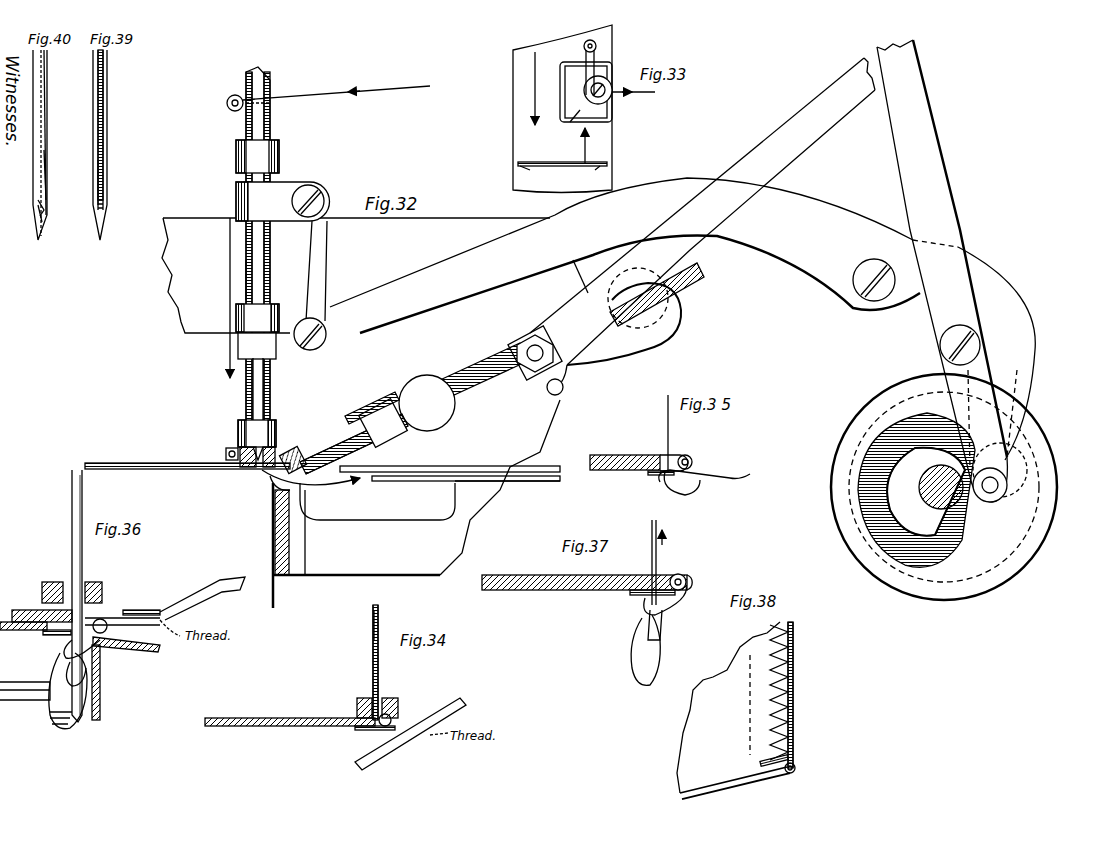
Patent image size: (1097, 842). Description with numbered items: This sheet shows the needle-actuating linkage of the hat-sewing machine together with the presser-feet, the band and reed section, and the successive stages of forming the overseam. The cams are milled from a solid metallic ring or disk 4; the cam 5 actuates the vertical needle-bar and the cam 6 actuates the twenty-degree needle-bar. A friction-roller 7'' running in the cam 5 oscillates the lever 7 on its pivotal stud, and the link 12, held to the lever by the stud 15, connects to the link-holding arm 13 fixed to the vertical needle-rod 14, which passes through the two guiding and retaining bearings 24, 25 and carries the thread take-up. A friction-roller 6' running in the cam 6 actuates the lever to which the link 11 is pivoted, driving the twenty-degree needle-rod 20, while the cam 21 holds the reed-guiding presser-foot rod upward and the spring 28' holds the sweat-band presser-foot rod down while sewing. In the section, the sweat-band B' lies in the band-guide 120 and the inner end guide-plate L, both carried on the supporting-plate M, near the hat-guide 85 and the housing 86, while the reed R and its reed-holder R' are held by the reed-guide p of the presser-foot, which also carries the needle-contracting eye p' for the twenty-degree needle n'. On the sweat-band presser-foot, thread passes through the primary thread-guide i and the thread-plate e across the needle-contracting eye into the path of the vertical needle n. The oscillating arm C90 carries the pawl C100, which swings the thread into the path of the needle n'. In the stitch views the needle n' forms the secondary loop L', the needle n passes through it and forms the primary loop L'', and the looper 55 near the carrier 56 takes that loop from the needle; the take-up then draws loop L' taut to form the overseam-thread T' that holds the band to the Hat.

In FIG. 32, the metallic ring or disk 4 is at (968, 600).
In FIG. 32, the vertical needle-bar cam 5 is at (1000, 495).
In FIG. 32, the twenty-degree needle-bar cam 6 is at (916, 515).
In FIG. 32, the friction-roller 6' is at (1022, 485).
In FIG. 32, the lever 7 is at (682, 319).
In FIG. 32, the friction-roller 7'' is at (956, 271).
In FIG. 32, the link 11 is at (785, 176).
In FIG. 32, the link 12 is at (326, 250).
In FIG. 32, the link-holding arm 13 is at (290, 192).
In FIG. 32, the vertical needle-rod 14 is at (270, 122).
In FIG. 32, the stud 15 is at (318, 348).
In FIG. 32, the twenty-degree needle-rod 20 is at (700, 286).
In FIG. 32, the cam 21 is at (665, 335).
In FIG. 32, the guiding and retaining bearing 24 is at (279, 148).
In FIG. 32, the guiding and retaining bearing 25 is at (236, 318).
In FIG. 32, the spring 28' is at (219, 274).
In FIG. 37, the looper 55 is at (658, 660).
In FIG. 36, the looper 55 is at (72, 725).
In FIG. 36, the shuttle carrier 56 is at (15, 672).
In FIG. 32, the hat-guide 85 is at (286, 575).
In FIG. 32, the housing 86 is at (416, 487).
In FIG. 32, the band-guide 120 is at (400, 466).
In FIG. 40, the needle n is at (50, 145).
In FIG. 39, the needle n is at (110, 145).
In FIG. 32, the needle n is at (266, 409).
In FIG. 36, the needle n is at (89, 596).
In FIG. 34, the needle n is at (386, 662).
In FIG. 32, the twenty-degree needle n' is at (323, 432).
In FIG. 36, the twenty-degree needle n' is at (202, 589).
In FIG. 34, the twenty-degree needle n' is at (410, 722).
In FIG. 33, the reed-guide p is at (543, 109).
In FIG. 32, the reed-guide p is at (269, 436).
In FIG. 32, the needle-contracting eye p' is at (368, 419).
In FIG. 32, the primary thread-guide i is at (226, 450).
In FIG. 32, the inner end guide-plate L is at (466, 490).
In FIG. 32, the supporting-plate M is at (468, 481).
In FIG. 32, the sweat-band B' is at (187, 478).
In FIG. 35, the sweat-band B' is at (639, 451).
In FIG. 37, the sweat-band B' is at (587, 575).
In FIG. 35, the reed R is at (700, 433).
In FIG. 37, the reed R is at (687, 562).
In FIG. 38, the reed R is at (804, 773).
In FIG. 35, the reed-holder R' is at (650, 483).
In FIG. 37, the reed-holder R' is at (637, 600).
In FIG. 38, the reed-holder R' is at (773, 776).
In FIG. 36, the reed-holder R' is at (55, 644).
In FIG. 34, the reed-holder R' is at (301, 727).
In FIG. 35, the secondary loop L' is at (704, 492).
In FIG. 37, the secondary loop L' is at (666, 600).
In FIG. 36, the secondary loop L' is at (97, 651).
In FIG. 37, the primary loop L'' is at (667, 625).
In FIG. 36, the primary loop L'' is at (95, 674).
In FIG. 36, the hat Hat is at (100, 692).
In FIG. 36, the oscillating plate or arm C90 is at (102, 615).
In FIG. 36, the pawl or dog C100 is at (140, 609).
In FIG. 38, the overseam-thread T' is at (825, 695).
In FIG. 33, the thread-plate e is at (560, 166).